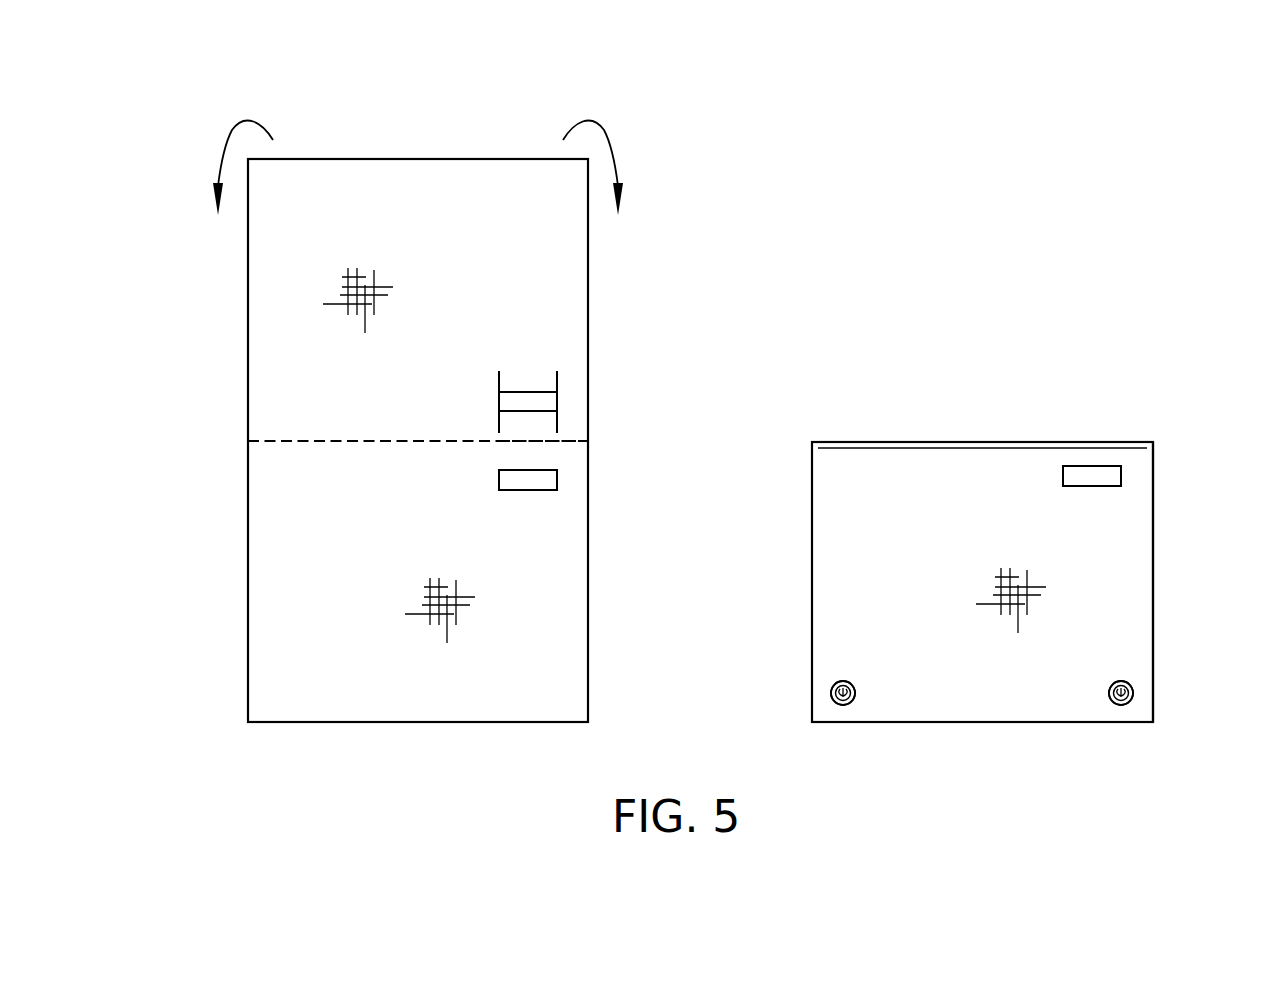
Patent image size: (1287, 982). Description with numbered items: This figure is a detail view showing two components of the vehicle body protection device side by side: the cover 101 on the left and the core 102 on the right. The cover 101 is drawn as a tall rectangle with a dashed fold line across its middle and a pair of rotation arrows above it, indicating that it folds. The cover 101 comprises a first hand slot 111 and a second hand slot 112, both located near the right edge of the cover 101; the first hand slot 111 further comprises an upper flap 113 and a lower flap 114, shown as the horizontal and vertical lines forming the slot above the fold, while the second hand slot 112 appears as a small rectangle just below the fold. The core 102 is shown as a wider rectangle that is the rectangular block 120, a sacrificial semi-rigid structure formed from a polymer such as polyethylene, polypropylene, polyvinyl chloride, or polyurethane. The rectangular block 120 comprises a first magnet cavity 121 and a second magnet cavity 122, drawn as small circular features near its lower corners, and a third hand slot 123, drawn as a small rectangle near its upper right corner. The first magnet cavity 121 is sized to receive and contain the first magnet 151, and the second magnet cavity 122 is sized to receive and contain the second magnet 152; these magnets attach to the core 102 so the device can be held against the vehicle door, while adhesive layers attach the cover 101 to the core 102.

The cover 101 is at (404, 159).
The first hand slot 111 is at (547, 402).
The second hand slot 112 is at (542, 483).
The upper flap 113 is at (527, 423).
The lower flap 114 is at (523, 382).
The core 102 is at (998, 442).
The rectangular block 120 is at (1153, 555).
The first magnet cavity 121 is at (844, 681).
The second magnet cavity 122 is at (1121, 681).
The third hand slot 123 is at (1107, 473).
The first magnet 151 is at (843, 705).
The second magnet 152 is at (1121, 705).